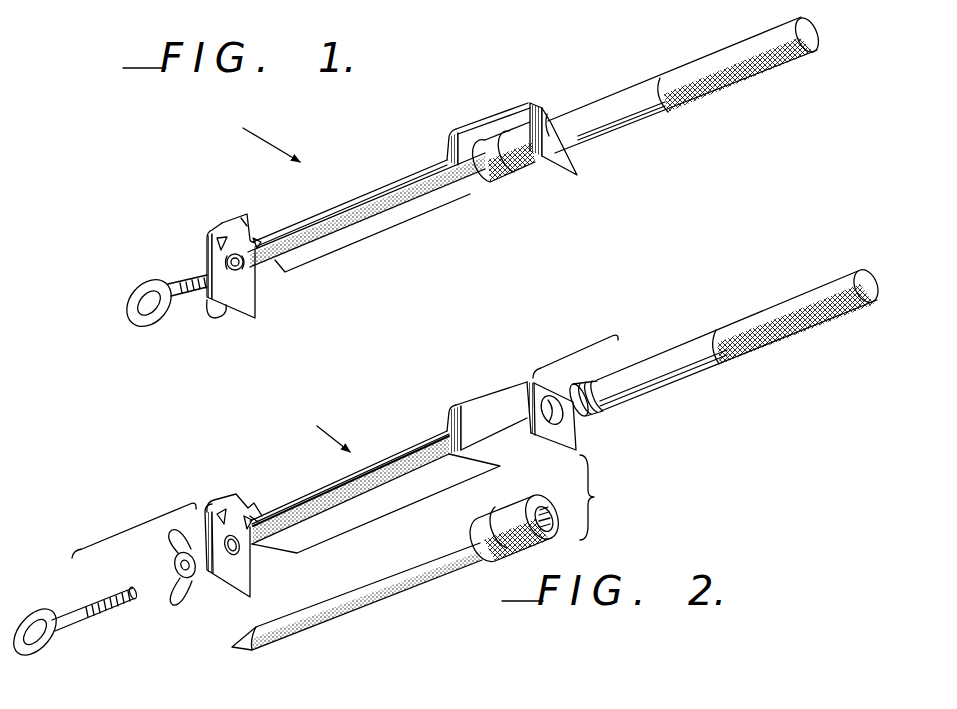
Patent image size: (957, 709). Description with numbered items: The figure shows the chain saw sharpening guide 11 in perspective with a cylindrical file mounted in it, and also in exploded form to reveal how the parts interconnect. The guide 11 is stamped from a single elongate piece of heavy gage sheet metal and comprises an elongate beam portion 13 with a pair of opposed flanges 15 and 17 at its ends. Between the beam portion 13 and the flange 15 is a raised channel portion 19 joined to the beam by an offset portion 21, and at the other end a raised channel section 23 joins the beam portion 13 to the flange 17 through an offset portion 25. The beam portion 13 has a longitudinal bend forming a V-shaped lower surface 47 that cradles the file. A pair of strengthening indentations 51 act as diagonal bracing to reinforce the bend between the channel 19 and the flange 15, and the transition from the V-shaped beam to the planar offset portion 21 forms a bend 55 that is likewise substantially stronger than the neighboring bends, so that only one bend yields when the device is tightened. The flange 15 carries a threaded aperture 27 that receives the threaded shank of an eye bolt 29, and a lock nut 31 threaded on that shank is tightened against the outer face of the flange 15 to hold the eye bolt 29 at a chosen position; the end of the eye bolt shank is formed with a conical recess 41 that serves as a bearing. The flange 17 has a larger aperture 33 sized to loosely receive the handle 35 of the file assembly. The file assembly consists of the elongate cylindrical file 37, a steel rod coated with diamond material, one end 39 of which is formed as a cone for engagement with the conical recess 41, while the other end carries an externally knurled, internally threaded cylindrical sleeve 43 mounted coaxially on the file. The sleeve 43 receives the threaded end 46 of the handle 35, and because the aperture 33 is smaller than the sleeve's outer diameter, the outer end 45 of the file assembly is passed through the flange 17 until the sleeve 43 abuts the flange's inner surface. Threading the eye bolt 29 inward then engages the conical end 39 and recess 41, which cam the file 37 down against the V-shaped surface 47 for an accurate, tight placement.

In FIG. 1, the guide 11 is at (257, 136).
In FIG. 2, the guide 11 is at (318, 431).
In FIG. 1, the beam portion 13 is at (388, 190).
In FIG. 2, the beam portion 13 is at (402, 458).
In FIG. 1, the flange 15 is at (207, 256).
In FIG. 2, the flange 15 is at (247, 583).
In FIG. 1, the flange 17 is at (575, 166).
In FIG. 2, the flange 17 is at (565, 438).
In FIG. 1, the raised channel portion 19 is at (222, 232).
In FIG. 2, the raised channel portion 19 is at (228, 507).
In FIG. 1, the offset portion 21 is at (249, 232).
In FIG. 2, the offset portion 21 is at (263, 512).
In FIG. 1, the raised channel section 23 is at (503, 113).
In FIG. 2, the raised channel section 23 is at (496, 392).
In FIG. 1, the offset portion 25 is at (449, 143).
In FIG. 2, the offset portion 25 is at (450, 424).
In FIG. 2, the threaded aperture 27 is at (241, 554).
In FIG. 1, the eye bolt 29 is at (138, 290).
In FIG. 2, the eye bolt 29 is at (45, 605).
In FIG. 1, the lock nut 31 is at (222, 314).
In FIG. 2, the lock nut 31 is at (168, 598).
In FIG. 1, the aperture 33 is at (556, 121).
In FIG. 2, the aperture 33 is at (549, 411).
In FIG. 1, the handle 35 is at (641, 118).
In FIG. 2, the handle 35 is at (689, 375).
In FIG. 1, the cylindrical file 37 is at (388, 215).
In FIG. 2, the cylindrical file 37 is at (393, 585).
In FIG. 1, the conical end 39 is at (255, 278).
In FIG. 2, the conical end 39 is at (241, 648).
In FIG. 2, the conical recess 41 is at (130, 586).
In FIG. 1, the cylindrical sleeve 43 is at (522, 181).
In FIG. 2, the cylindrical sleeve 43 is at (523, 493).
In FIG. 1, the outer end of the file 45 is at (770, 38).
In FIG. 2, the outer end of the file 45 is at (810, 292).
In FIG. 2, the threaded end 46 is at (583, 393).
In FIG. 2, the V-shaped lower surface 47 is at (373, 493).
In FIG. 1, the strengthening indentations 51 is at (218, 238).
In FIG. 2, the strengthening indentations 51 is at (221, 508).
In FIG. 1, the bend 55 is at (258, 242).
In FIG. 2, the bend 55 is at (248, 535).